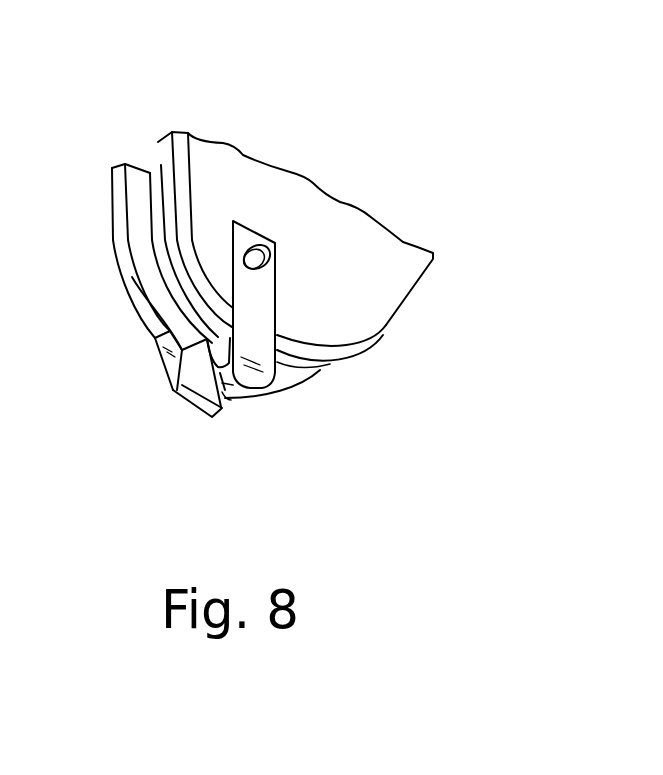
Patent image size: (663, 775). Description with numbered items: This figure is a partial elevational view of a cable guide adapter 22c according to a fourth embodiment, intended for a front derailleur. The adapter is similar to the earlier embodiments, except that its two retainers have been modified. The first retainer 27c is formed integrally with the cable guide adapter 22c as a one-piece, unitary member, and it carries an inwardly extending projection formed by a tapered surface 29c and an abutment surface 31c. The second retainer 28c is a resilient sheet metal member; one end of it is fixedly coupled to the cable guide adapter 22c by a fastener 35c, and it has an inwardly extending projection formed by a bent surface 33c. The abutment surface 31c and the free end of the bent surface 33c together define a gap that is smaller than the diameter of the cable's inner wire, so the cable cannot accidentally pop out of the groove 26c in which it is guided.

The cable guide adapter 22c is at (265, 95).
The groove 26c is at (156, 181).
The retainer 28c is at (285, 285).
The fastener 35c is at (256, 256).
The abutment surface 31c is at (152, 335).
The tapered surface 29c is at (199, 388).
The retainer 27c is at (218, 423).
The bent surface 33c is at (226, 403).